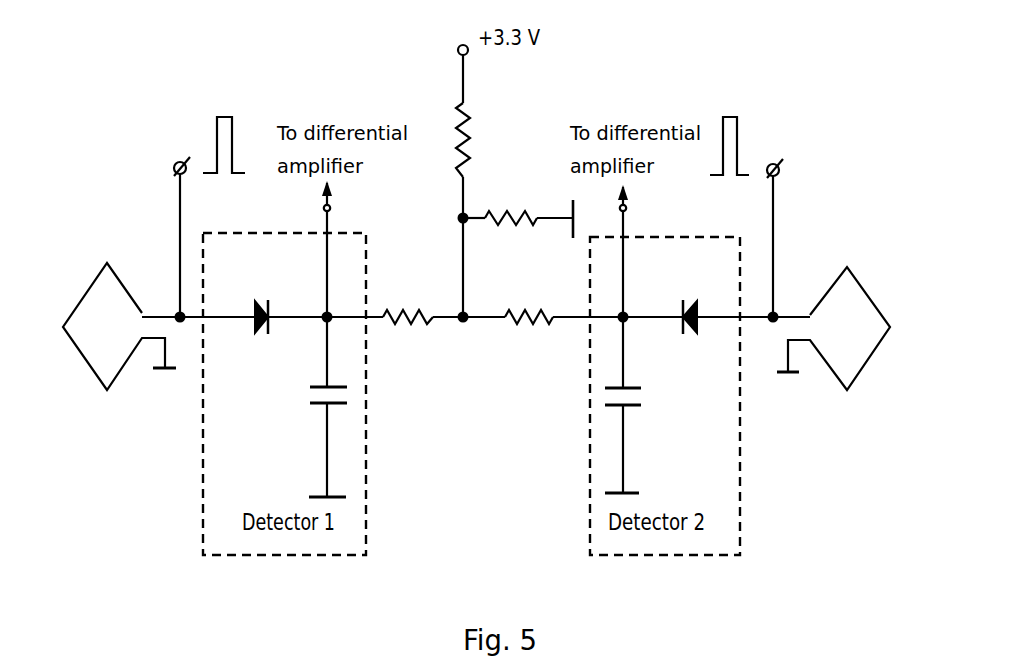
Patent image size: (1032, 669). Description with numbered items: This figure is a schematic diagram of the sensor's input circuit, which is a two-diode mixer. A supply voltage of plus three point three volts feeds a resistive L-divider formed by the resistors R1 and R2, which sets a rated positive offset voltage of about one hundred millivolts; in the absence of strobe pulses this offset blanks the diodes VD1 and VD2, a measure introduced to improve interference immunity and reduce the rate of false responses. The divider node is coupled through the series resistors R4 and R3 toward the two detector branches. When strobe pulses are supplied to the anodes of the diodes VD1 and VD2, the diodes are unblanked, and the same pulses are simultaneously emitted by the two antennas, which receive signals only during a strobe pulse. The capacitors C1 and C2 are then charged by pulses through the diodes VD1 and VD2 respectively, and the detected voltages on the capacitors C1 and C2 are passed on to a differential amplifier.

The diode VD1 is at (261, 296).
The diode VD2 is at (690, 297).
The capacitor C1 is at (312, 407).
The capacitor C2 is at (640, 405).
The resistor R1 is at (477, 140).
The resistor R2 is at (518, 205).
The series resistor to Detector 2 R3 is at (529, 298).
The series resistor to Detector 1 R4 is at (408, 298).